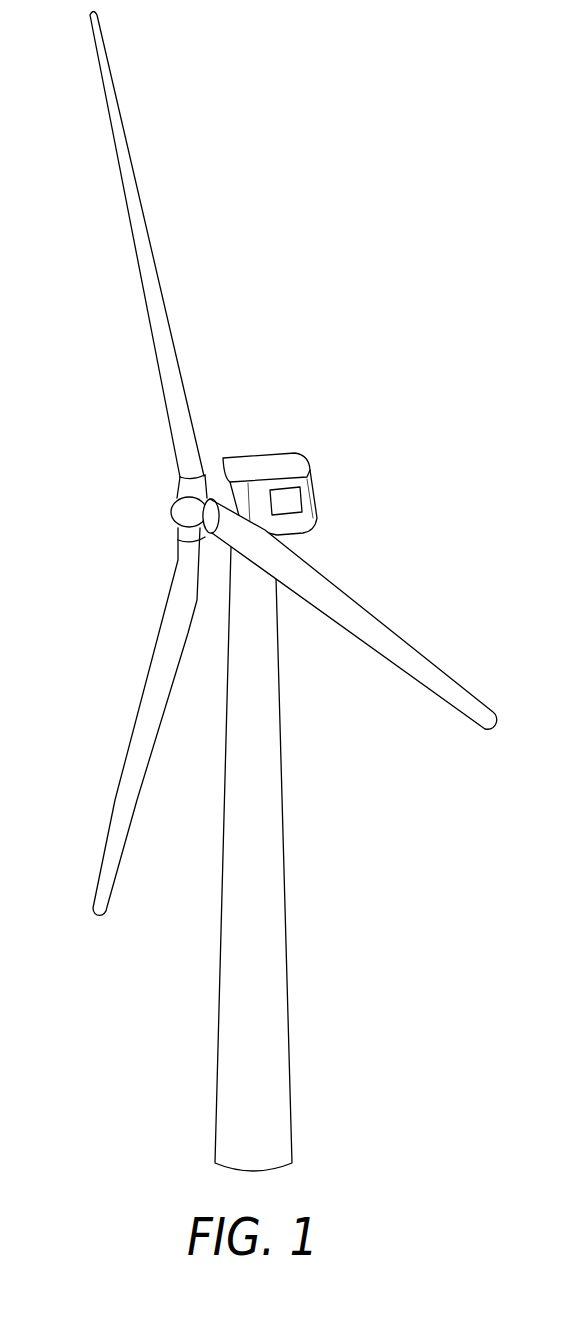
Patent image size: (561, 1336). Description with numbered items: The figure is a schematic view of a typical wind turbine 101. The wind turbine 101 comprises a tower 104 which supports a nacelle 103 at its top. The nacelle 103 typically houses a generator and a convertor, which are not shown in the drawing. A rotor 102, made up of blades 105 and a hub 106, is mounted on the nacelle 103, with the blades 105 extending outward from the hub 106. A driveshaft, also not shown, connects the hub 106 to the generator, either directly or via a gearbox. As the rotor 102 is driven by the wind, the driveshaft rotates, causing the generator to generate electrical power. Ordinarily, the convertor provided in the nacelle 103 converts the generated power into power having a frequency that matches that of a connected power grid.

The wind turbine 101 is at (378, 284).
The rotor 102 is at (138, 240).
The nacelle 103 is at (270, 466).
The tower 104 is at (285, 881).
The blades 105 is at (93, 905).
The hub 106 is at (173, 513).